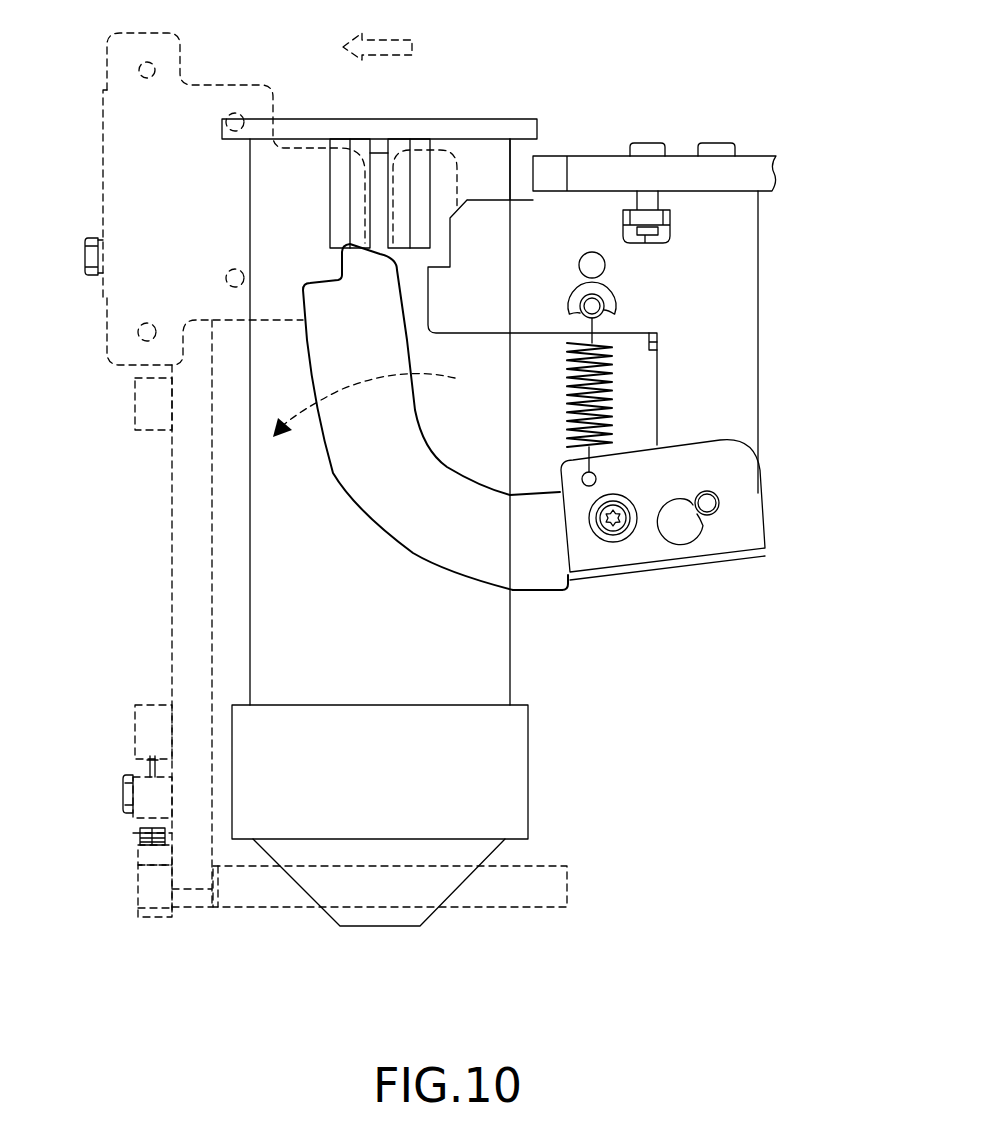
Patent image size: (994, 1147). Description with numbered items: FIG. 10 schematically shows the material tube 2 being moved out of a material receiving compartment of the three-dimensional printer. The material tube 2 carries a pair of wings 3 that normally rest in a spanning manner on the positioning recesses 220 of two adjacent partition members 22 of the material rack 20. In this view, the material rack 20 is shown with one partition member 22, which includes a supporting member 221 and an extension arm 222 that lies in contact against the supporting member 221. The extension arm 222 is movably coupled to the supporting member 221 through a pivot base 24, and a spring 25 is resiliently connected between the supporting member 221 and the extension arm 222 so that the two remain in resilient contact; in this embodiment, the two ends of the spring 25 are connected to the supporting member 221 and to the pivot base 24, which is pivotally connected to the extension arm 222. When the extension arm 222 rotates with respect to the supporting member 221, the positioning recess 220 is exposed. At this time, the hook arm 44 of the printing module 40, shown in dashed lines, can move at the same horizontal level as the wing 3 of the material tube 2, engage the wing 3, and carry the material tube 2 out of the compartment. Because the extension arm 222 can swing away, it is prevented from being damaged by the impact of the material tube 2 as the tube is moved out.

The material tube 2 is at (292, 615).
The wings 3 is at (381, 175).
The material rack 20 is at (688, 146).
The partition member 22 is at (335, 496).
The pivot base 24 is at (665, 538).
The spring 25 is at (610, 393).
The printing module 40 is at (114, 378).
The hook arm 44 is at (450, 172).
The positioning recess 220 is at (440, 257).
The supporting member 221 is at (538, 315).
The extension arm 222 is at (460, 567).